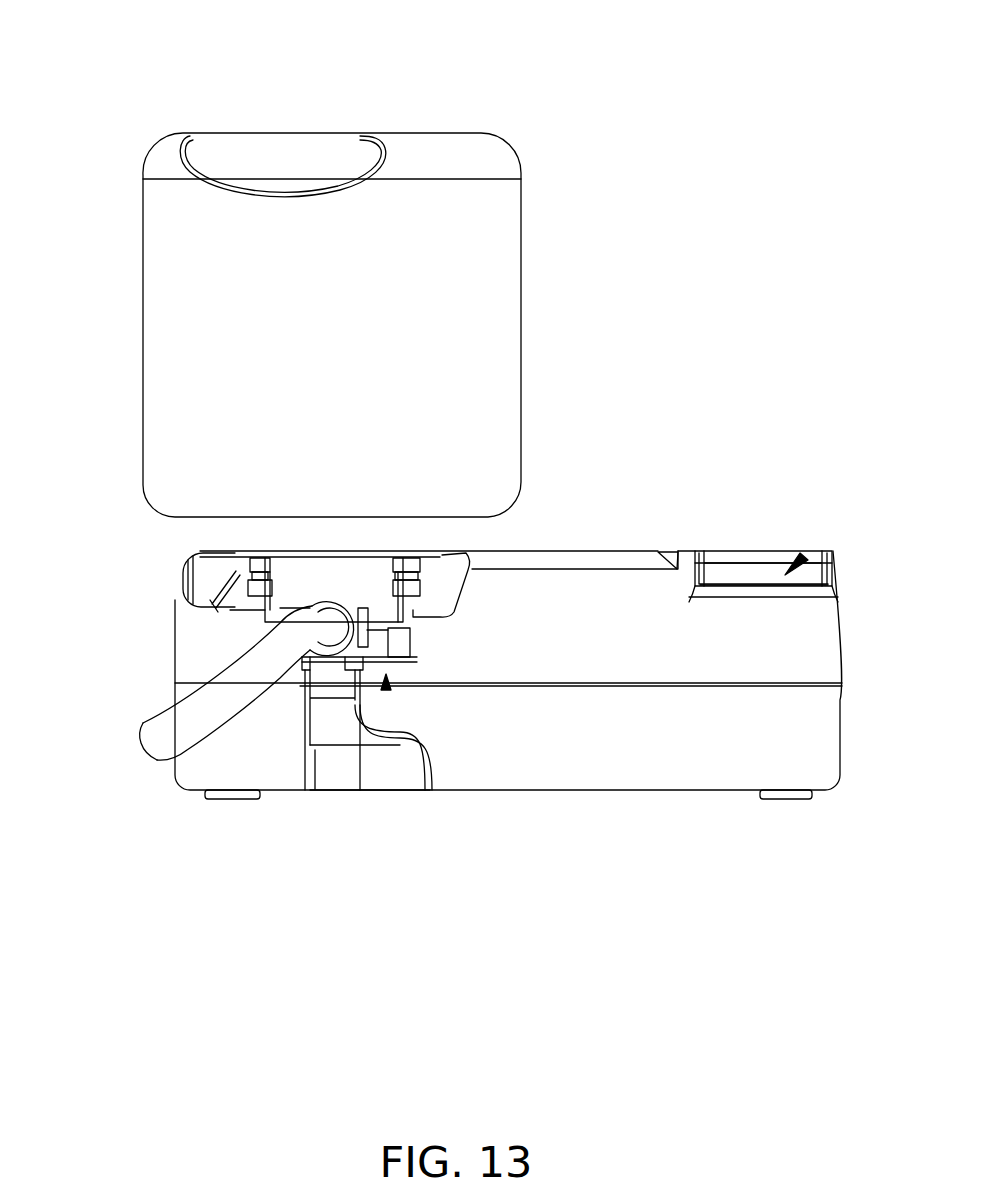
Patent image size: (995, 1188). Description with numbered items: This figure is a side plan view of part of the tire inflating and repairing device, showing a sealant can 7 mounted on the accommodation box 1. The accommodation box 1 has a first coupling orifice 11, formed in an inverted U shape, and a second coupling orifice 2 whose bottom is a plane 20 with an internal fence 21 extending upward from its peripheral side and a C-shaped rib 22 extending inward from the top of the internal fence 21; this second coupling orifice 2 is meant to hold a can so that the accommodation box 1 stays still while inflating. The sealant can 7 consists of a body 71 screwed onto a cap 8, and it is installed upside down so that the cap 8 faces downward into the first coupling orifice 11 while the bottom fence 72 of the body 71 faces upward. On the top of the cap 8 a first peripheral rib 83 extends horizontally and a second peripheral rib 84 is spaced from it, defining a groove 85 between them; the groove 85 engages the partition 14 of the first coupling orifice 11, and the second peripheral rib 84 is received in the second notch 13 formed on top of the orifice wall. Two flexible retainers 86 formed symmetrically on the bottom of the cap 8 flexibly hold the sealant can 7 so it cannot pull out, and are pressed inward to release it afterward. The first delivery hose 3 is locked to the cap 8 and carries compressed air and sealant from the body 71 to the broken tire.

The accommodation box 1 is at (602, 597).
The second coupling orifice 2 is at (820, 552).
The first delivery hose 3 is at (178, 733).
The sealant can 7 is at (178, 148).
The cap 8 is at (333, 577).
The first coupling orifice 11 is at (388, 684).
The second notch 13 is at (230, 590).
The partition 14 is at (225, 580).
The plane 20 is at (787, 586).
The internal fence 21 is at (743, 572).
The C-shaped rib 22 is at (787, 558).
The body 71 is at (178, 295).
The bottom fence 72 is at (425, 134).
The first peripheral rib 83 is at (257, 562).
The second peripheral rib 84 is at (258, 590).
The groove 85 is at (240, 568).
The flexible retainers 86 is at (235, 617).